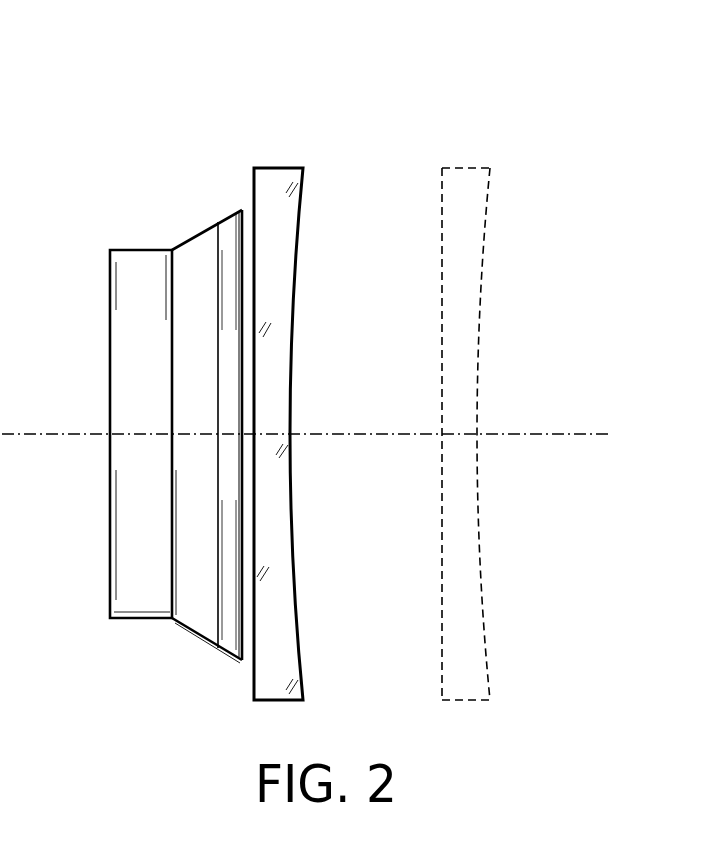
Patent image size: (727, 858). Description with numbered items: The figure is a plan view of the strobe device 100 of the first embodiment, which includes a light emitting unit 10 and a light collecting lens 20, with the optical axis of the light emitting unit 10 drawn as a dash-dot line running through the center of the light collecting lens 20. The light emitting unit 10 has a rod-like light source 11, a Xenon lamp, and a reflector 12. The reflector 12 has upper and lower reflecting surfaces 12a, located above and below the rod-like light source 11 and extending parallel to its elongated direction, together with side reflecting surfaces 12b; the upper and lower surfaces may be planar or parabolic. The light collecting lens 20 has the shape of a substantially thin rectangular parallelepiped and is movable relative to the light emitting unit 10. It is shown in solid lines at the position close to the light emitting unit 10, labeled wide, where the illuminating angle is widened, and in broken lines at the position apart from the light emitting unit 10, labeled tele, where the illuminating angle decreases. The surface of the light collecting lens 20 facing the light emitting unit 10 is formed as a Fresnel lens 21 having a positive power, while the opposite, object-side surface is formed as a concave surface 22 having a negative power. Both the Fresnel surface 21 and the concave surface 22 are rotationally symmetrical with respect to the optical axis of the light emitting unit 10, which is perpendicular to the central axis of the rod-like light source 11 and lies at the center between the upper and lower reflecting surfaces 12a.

The light emitting unit 10 is at (152, 434).
The rod-like light source 11 is at (122, 390).
The reflector 12 is at (186, 443).
The upper and lower reflecting surfaces 12a is at (186, 666).
The side reflecting surfaces 12b is at (197, 230).
The light collecting lens 20 is at (400, 375).
The Fresnel lens 21 is at (441, 296).
The concave surface 22 is at (480, 553).
The strobe device 100 is at (326, 382).